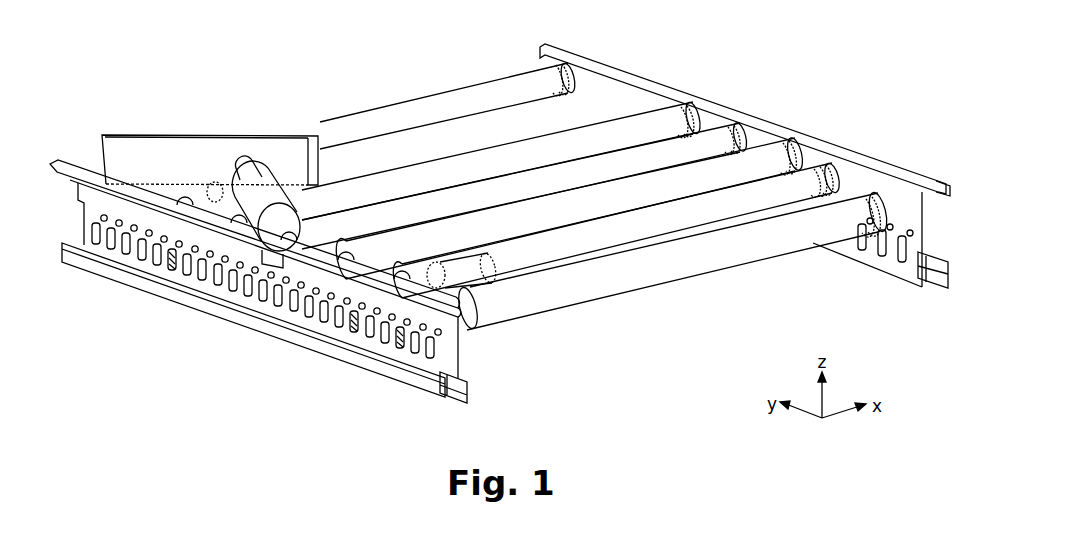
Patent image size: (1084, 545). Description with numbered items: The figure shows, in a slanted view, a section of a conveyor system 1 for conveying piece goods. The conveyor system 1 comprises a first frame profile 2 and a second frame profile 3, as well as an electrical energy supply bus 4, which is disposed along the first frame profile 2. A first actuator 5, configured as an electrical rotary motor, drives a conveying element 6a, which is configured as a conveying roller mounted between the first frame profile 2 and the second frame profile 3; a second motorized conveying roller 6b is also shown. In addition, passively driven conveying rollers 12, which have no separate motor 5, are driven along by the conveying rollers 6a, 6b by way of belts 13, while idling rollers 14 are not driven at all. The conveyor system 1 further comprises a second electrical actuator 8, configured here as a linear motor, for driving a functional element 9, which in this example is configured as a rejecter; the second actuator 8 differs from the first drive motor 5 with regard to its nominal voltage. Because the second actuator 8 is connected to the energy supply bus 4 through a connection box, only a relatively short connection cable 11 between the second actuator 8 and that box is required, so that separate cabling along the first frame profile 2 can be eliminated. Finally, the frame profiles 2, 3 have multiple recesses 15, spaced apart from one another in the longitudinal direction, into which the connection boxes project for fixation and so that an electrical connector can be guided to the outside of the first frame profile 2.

The conveyor system 1 is at (300, 66).
The first frame profile 2 is at (255, 279).
The second frame profile 3 is at (888, 262).
The electrical energy supply bus 4 is at (463, 385).
The first actuator 5 is at (470, 268).
The conveying element 6a is at (808, 180).
The second motorized conveying roller 6b is at (542, 117).
The second electrical actuator 8 is at (257, 212).
The functional element 9 is at (193, 150).
The connection cable 11 is at (262, 260).
The passively driven conveying roller 12 is at (658, 270).
The belt 13 is at (857, 173).
The idling roller 14 is at (655, 112).
The recess 15 is at (363, 337).